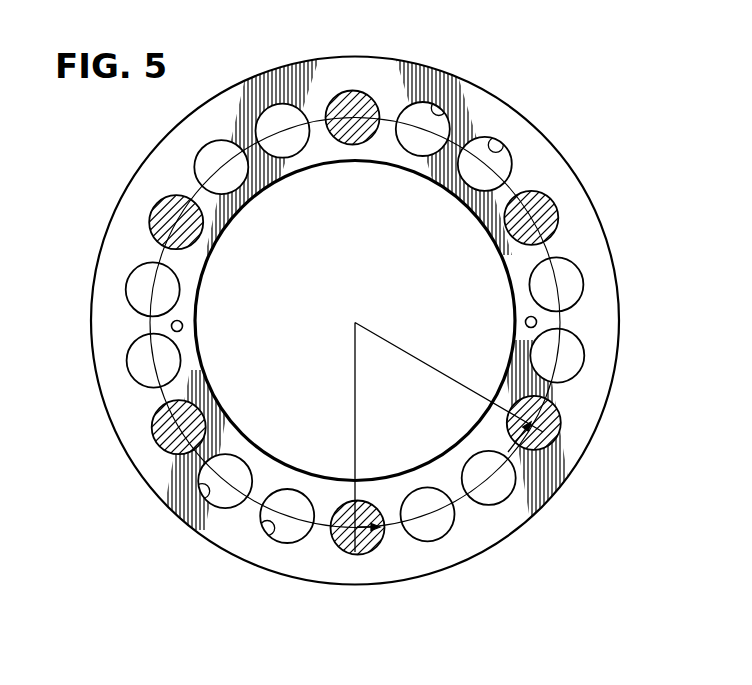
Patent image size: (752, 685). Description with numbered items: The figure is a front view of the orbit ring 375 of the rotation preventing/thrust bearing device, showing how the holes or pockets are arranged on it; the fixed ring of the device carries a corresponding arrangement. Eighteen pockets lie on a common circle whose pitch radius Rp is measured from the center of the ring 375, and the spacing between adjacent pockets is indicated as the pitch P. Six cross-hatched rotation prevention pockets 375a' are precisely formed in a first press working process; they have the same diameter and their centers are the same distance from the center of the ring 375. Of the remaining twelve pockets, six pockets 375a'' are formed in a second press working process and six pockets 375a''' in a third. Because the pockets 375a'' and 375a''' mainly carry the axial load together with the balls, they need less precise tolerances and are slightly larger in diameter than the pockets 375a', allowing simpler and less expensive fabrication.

The orbit ring 375 is at (575, 173).
The rotation prevention pockets 375a' is at (359, 327).
The pockets formed in second press working process 375a'' is at (405, 340).
The pockets formed in third press working process 375a''' is at (385, 343).
The pitch of bores P is at (464, 508).
The pitch radius Rp is at (356, 527).